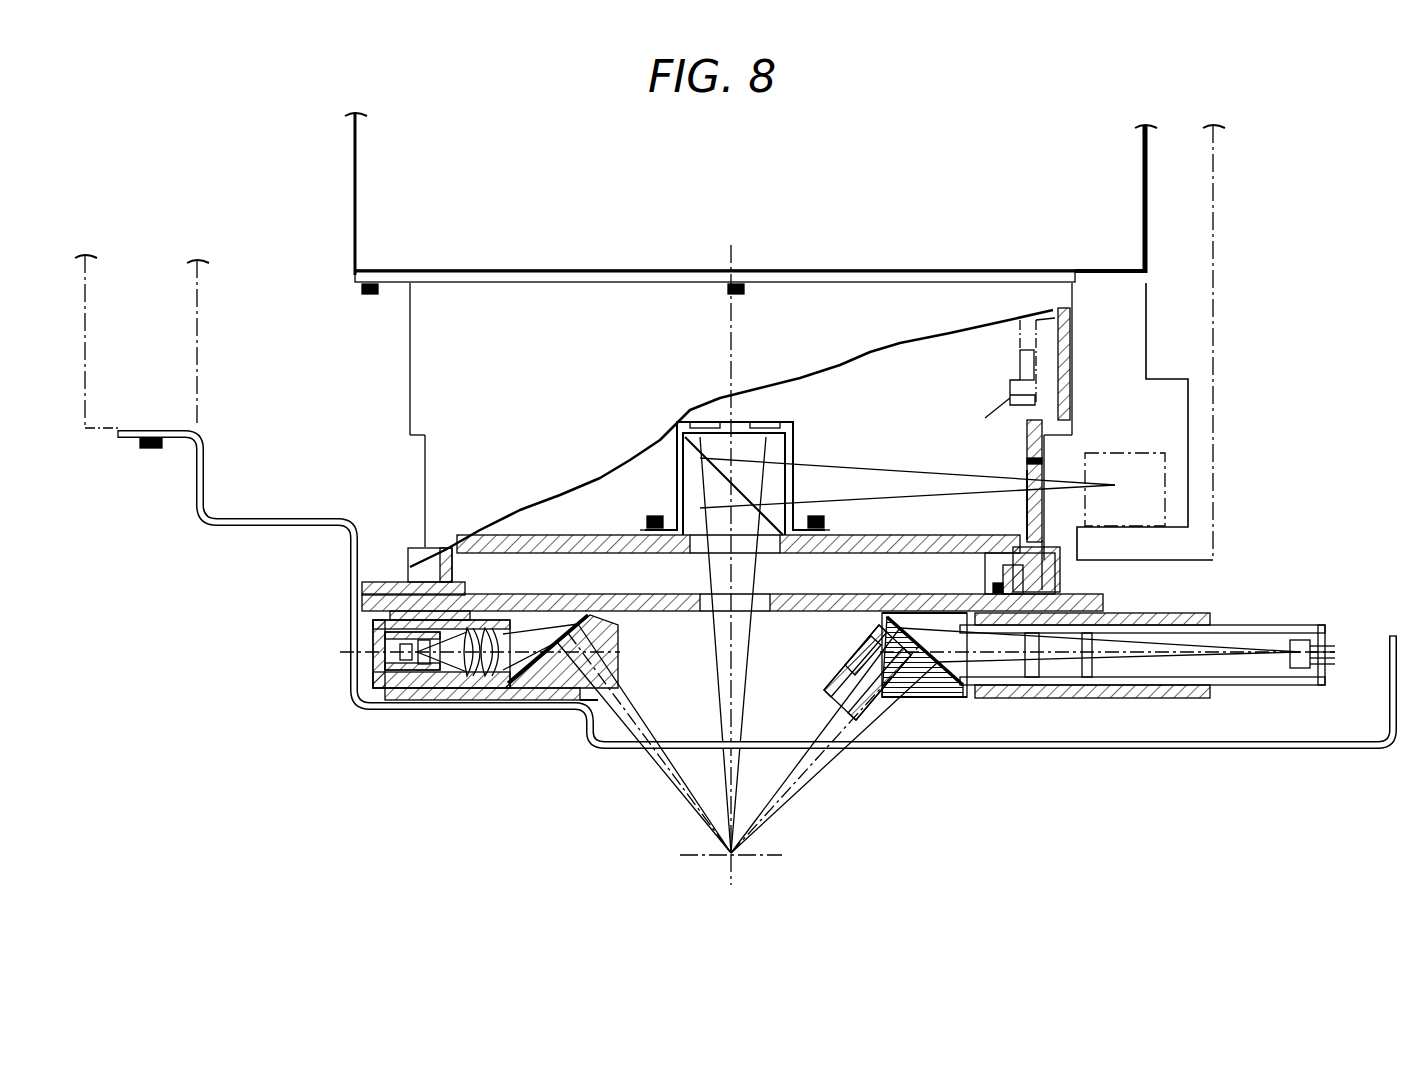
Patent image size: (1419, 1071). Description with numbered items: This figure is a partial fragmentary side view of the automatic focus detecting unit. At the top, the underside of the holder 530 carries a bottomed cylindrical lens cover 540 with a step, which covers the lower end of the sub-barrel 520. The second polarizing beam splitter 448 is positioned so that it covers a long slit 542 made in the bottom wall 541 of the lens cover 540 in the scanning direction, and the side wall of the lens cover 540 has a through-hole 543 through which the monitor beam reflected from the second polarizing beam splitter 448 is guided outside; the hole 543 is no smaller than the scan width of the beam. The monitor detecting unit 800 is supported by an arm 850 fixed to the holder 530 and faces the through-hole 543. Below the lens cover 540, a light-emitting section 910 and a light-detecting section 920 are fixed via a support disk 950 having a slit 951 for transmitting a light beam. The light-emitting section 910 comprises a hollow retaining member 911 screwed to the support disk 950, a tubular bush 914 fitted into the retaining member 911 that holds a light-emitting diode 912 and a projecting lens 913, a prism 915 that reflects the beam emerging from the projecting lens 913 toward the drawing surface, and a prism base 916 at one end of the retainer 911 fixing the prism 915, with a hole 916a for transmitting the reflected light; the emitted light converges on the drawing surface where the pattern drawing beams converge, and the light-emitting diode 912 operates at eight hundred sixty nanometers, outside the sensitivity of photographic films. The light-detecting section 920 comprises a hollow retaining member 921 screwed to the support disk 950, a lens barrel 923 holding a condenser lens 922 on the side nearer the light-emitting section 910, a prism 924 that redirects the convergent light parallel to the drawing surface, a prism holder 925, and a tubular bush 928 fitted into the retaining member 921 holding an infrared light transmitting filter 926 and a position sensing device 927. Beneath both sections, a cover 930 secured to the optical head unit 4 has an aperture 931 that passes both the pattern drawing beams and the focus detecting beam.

The optical head unit 4 is at (118, 330).
The second polarizing beam splitter 448 is at (793, 438).
The sub-barrel 520 is at (1078, 352).
The holder 530 is at (1130, 253).
The lens cover 540 is at (1080, 400).
The bottom wall 541 is at (537, 540).
The long slit 542 is at (773, 555).
The through-hole 543 is at (1025, 500).
The monitor detecting unit 800 is at (1150, 470).
The arm 850 is at (1190, 186).
The light-emitting section 910 is at (372, 694).
The hollow retaining member 911 is at (350, 605).
The light-emitting diode 912 is at (395, 652).
The projecting lens 913 is at (465, 692).
The tubular bush 914 is at (375, 628).
The prism 915 is at (520, 692).
The prism base 916 is at (545, 692).
The hole 916a is at (582, 706).
The light-detecting section 920 is at (1133, 704).
The hollow retaining member 921 is at (1160, 613).
The condenser lens 922 is at (857, 732).
The lens barrel 923 is at (882, 700).
The prism 924 is at (970, 698).
The prism holder 925 is at (925, 698).
The infrared light transmitting filter 926 is at (1030, 692).
The position sensing device 927 is at (1298, 640).
The tubular bush 928 is at (1090, 692).
The cover 930 is at (228, 537).
The aperture 931 is at (600, 750).
The support disk 950 is at (522, 596).
The slit 951 is at (760, 612).